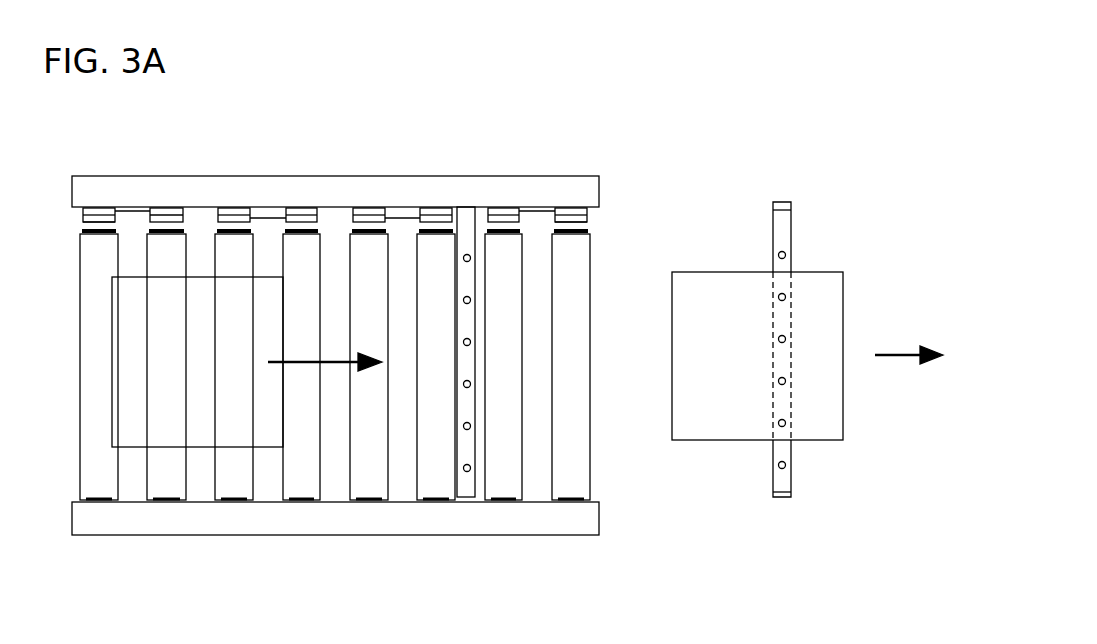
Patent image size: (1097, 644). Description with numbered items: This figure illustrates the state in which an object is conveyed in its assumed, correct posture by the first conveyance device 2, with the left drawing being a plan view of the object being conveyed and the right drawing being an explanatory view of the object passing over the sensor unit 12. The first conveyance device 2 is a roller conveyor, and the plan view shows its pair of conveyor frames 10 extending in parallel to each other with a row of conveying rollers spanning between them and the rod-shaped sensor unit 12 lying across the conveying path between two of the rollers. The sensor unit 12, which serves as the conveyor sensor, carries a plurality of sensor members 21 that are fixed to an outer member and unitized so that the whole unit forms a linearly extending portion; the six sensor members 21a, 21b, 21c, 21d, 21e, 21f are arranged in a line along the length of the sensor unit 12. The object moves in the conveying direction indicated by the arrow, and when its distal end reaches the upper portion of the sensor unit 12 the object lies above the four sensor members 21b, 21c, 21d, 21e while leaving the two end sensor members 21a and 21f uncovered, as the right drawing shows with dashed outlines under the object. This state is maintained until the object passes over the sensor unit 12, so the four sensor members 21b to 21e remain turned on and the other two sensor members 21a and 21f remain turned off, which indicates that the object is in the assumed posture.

The first conveyance device 2 is at (186, 158).
The conveyor frames 10 is at (265, 180).
The sensor unit 12 is at (468, 230).
The sensor members 21 is at (646, 358).
The sensor member 21a is at (466, 255).
The sensor member 21b is at (786, 297).
The sensor member 21c is at (780, 340).
The sensor member 21d is at (780, 381).
The sensor member 21e is at (470, 430).
The sensor member 21f is at (468, 471).